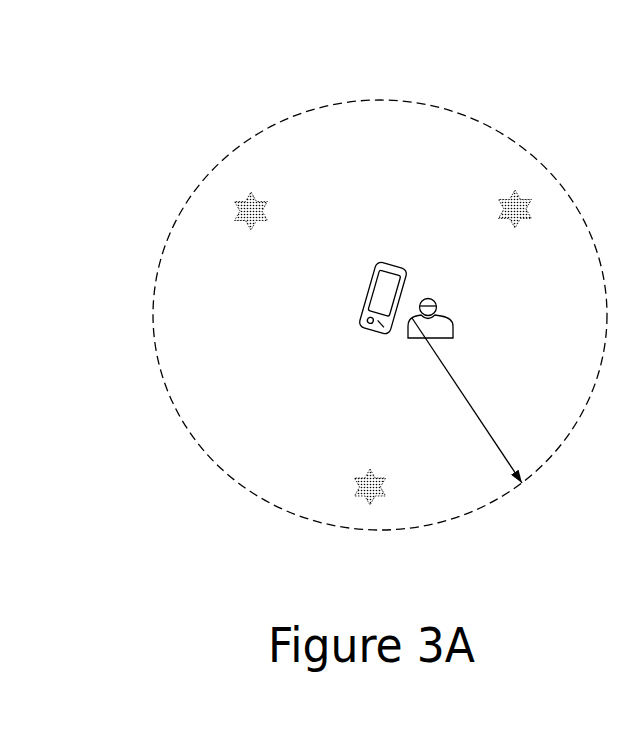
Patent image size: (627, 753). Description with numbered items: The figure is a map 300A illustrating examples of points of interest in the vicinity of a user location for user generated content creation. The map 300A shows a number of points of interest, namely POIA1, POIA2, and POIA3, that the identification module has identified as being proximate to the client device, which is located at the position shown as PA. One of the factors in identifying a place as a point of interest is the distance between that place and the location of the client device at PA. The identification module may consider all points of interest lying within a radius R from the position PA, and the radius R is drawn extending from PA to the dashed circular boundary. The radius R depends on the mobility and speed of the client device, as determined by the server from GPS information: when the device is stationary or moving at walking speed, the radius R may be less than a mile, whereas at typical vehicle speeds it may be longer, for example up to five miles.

The map 300A is at (237, 82).
The position of the client device PA is at (405, 299).
The radius R is at (467, 400).
The point of interest POIA1 is at (515, 229).
The point of interest POIA2 is at (252, 231).
The point of interest POIA3 is at (384, 471).